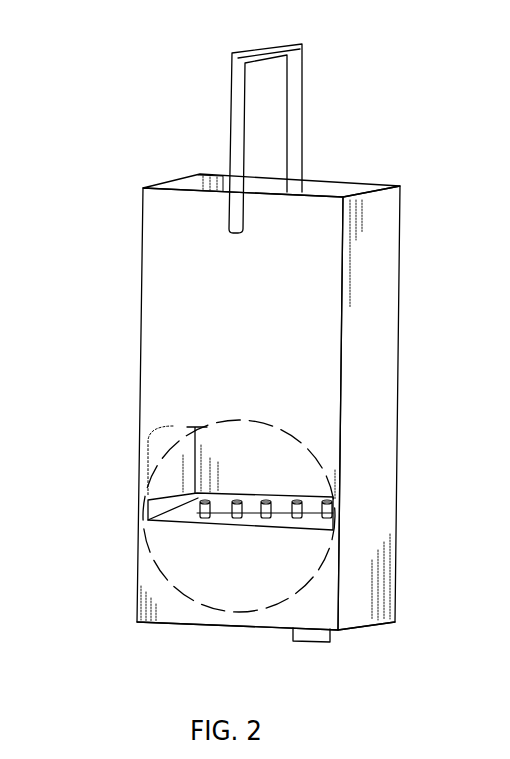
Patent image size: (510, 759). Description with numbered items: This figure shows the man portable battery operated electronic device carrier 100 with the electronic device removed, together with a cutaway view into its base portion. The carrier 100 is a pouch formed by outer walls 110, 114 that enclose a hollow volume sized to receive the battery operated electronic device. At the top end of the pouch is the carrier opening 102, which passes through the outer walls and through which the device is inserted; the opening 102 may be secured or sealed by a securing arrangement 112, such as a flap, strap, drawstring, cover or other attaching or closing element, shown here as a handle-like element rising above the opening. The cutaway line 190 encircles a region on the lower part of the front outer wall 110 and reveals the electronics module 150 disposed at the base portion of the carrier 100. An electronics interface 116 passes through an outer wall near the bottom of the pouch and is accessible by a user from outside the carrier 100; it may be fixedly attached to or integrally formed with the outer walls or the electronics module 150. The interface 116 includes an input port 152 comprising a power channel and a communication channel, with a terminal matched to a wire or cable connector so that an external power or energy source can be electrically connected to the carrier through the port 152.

The carrier 100 is at (158, 141).
The carrier opening 102 is at (352, 178).
The outer wall 110 is at (167, 292).
The securing arrangement 112 is at (303, 78).
The outer wall 114 is at (380, 338).
The electronics interface 116 is at (330, 632).
The electronics module 150 is at (193, 565).
The input port 152 is at (313, 643).
The cutaway line 190 is at (153, 430).